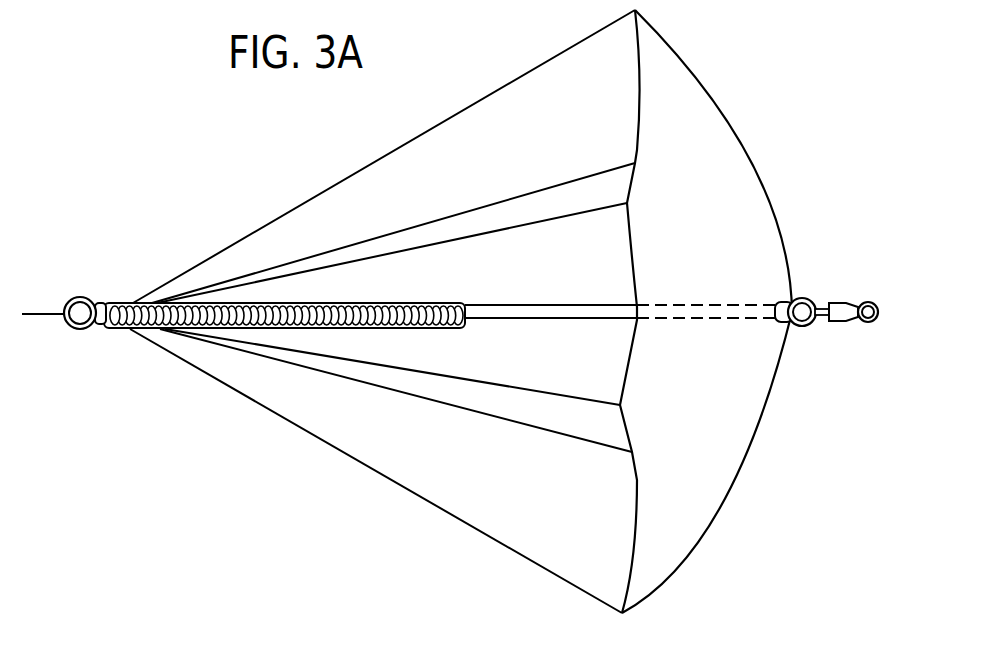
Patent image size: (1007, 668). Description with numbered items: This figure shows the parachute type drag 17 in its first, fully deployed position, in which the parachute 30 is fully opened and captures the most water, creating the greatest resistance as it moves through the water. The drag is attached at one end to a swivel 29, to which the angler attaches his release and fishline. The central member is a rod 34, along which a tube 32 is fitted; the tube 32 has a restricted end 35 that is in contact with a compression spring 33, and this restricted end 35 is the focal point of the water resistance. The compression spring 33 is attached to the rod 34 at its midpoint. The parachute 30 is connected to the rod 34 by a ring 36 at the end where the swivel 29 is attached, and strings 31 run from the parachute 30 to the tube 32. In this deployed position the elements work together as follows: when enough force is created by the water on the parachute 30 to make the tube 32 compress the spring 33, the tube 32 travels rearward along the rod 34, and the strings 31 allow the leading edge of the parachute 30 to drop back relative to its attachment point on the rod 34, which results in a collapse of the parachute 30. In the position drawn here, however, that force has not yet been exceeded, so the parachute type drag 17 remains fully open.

The parachute type drag 17 is at (127, 240).
The swivel 29 is at (842, 324).
The parachute 30 is at (753, 158).
The strings 31 is at (371, 164).
The tube 32 is at (398, 329).
The compression spring 33 is at (383, 303).
The rod 34 is at (584, 319).
The restricted end 35 is at (106, 330).
The ring 36 is at (82, 298).